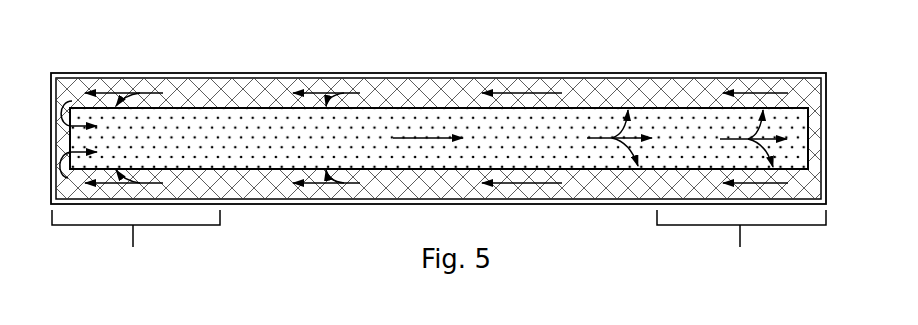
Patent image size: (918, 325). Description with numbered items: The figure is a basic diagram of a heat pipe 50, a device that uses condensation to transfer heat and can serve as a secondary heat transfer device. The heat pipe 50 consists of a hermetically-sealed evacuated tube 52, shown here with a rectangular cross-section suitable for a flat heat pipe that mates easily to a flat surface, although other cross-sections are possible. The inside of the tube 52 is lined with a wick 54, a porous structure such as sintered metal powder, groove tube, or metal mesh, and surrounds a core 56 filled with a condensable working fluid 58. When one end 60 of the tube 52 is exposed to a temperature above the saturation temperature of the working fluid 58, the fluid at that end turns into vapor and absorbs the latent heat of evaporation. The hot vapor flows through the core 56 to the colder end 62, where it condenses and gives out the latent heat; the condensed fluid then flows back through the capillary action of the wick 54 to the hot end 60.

The heat pipe 50 is at (418, 72).
The hermetically-sealed evacuated tube 52 is at (185, 77).
The wick 54 is at (255, 93).
The core 56 is at (576, 107).
The condensable working fluid 58 is at (680, 122).
The end 60 is at (136, 242).
The end 62 is at (741, 242).